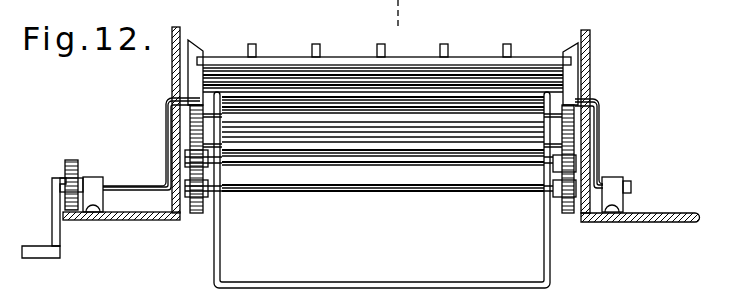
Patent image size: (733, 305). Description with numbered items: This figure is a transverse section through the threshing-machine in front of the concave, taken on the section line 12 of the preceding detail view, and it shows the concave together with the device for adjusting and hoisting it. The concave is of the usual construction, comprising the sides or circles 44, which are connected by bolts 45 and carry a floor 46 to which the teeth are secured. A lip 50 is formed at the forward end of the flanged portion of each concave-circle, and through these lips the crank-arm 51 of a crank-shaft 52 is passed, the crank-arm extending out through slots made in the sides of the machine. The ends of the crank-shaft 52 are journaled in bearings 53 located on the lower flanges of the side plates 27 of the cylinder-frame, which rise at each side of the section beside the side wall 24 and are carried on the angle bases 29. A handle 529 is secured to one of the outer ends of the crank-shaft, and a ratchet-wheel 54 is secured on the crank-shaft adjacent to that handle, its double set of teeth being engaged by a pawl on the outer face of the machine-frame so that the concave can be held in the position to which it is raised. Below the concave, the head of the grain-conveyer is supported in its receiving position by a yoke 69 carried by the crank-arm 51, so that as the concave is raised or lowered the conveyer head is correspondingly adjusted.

The section line 12 is at (384, 32).
The side wall 24 is at (176, 40).
The side plates 27 is at (594, 62).
The angle bracket base 29 is at (150, 214).
The sides or circles 44 is at (198, 128).
The bolts 45 is at (466, 178).
The floor 46 is at (387, 131).
The lip 50 is at (196, 90).
The crank-arm 51 is at (465, 105).
The crank-shaft 52 is at (154, 186).
The bearings 53 is at (95, 183).
The ratchet-wheel 54 is at (67, 166).
The yoke 69 is at (222, 252).
The handle 529 is at (55, 226).